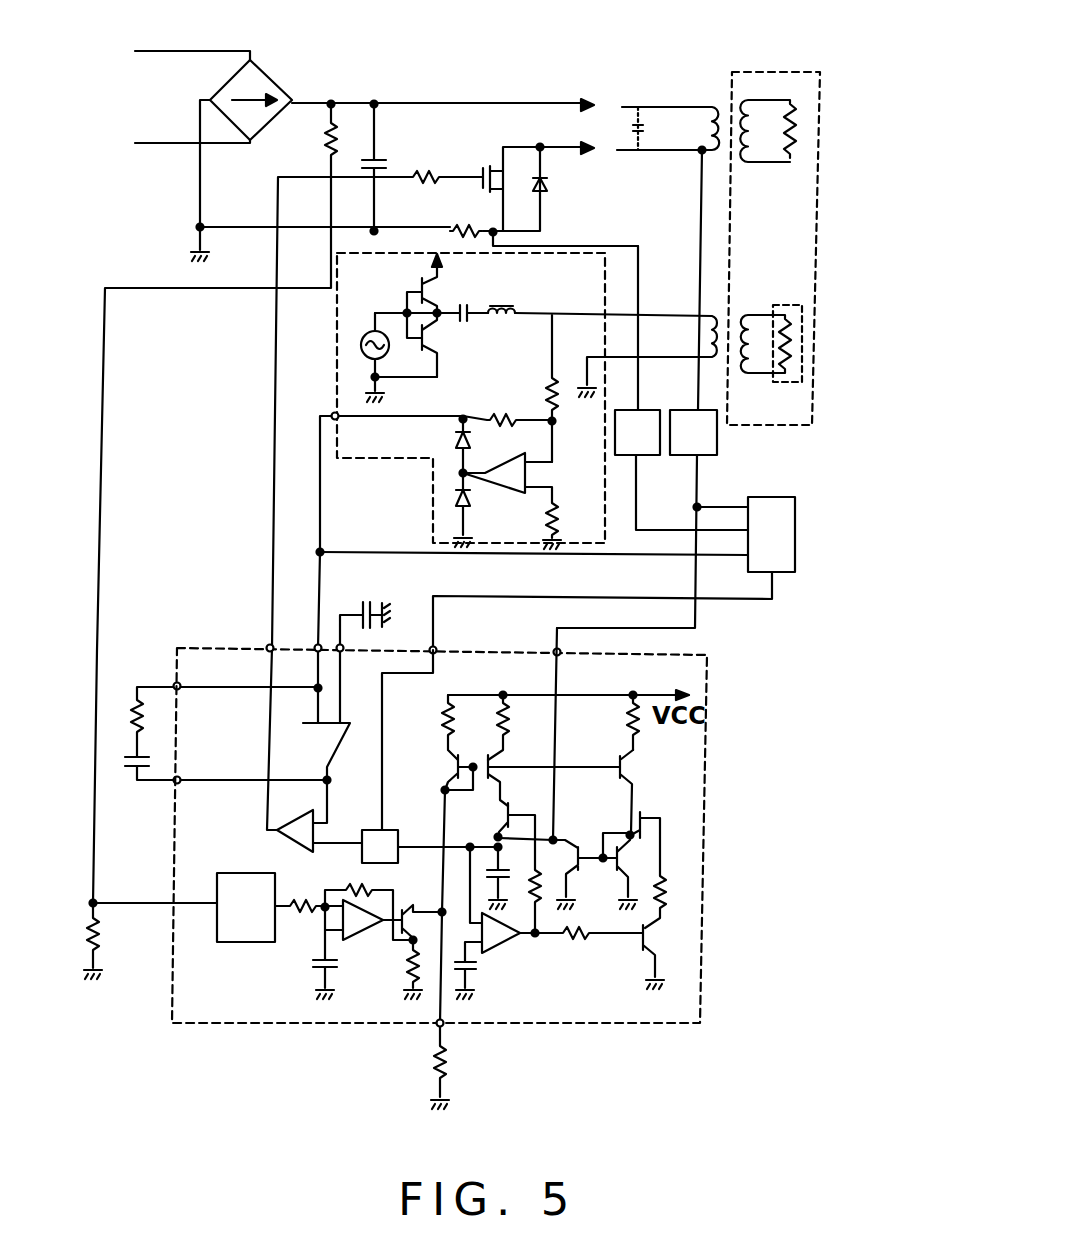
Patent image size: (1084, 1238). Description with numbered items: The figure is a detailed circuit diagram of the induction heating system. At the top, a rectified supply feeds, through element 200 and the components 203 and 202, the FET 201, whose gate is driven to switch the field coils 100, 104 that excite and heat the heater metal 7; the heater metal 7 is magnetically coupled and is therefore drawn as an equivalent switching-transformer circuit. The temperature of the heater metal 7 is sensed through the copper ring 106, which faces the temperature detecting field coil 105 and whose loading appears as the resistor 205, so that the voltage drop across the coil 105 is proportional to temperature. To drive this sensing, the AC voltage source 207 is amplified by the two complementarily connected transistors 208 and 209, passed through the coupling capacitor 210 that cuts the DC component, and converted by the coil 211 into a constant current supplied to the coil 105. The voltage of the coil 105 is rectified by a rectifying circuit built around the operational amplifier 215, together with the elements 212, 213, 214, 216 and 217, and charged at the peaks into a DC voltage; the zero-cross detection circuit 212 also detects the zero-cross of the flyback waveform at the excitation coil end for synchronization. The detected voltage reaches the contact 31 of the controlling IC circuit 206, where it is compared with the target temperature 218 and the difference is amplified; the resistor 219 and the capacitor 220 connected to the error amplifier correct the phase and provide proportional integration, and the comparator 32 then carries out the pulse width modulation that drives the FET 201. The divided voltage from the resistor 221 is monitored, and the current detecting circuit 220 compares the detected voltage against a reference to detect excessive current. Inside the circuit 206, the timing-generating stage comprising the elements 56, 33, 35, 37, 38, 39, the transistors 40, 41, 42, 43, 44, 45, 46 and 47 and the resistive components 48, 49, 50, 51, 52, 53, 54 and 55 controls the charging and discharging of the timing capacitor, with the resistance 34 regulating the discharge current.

The rectifier 200 is at (263, 78).
The FET 201 is at (482, 187).
The diode 202 is at (548, 184).
The resistor 203 is at (440, 175).
The field coils 100 is at (657, 107).
The field coils 104 is at (668, 221).
The heater metal 7 is at (803, 70).
The temperature detecting field coil 105 is at (716, 318).
The resistor 205 is at (817, 364).
The copper ring 106 is at (802, 355).
The controlling IC circuit 206 is at (200, 645).
The AC voltage source 207 is at (360, 338).
The transistor 208 is at (415, 290).
The transistor 209 is at (437, 333).
The coupling capacitor 210 is at (462, 304).
The coil 211 is at (510, 304).
The zero-cross detection circuit 212 is at (548, 385).
The resistor 213 is at (500, 416).
The resistor 214 is at (560, 505).
The operational amplifier 215 is at (503, 468).
The diode 216 is at (457, 440).
The diode 217 is at (470, 503).
The target temperature 218 is at (370, 608).
The resistor 219 is at (717, 445).
The capacitor 220 is at (648, 455).
The resistor 221 is at (790, 527).
The contact 31 is at (312, 645).
The terminal 56 is at (268, 645).
The comparator 32 is at (300, 832).
The terminal 33 is at (437, 1028).
The resistance 34 is at (447, 1055).
The capacitor 35 is at (503, 878).
The capacitor 37 is at (312, 962).
The amplifier 38 is at (505, 940).
The capacitor 39 is at (472, 975).
The transistor 40 is at (455, 765).
The transistor 41 is at (497, 760).
The transistor 42 is at (635, 765).
The transistor 43 is at (500, 810).
The transistor 44 is at (633, 815).
The transistor 45 is at (572, 838).
The transistor 46 is at (620, 878).
The transistor 47 is at (652, 948).
The resistor 48 is at (378, 890).
The resistor 49 is at (300, 903).
The resistor 50 is at (447, 720).
The resistor 51 is at (500, 725).
The resistor 52 is at (628, 722).
The resistor 53 is at (538, 893).
The resistor 54 is at (578, 940).
The resistor 55 is at (662, 880).